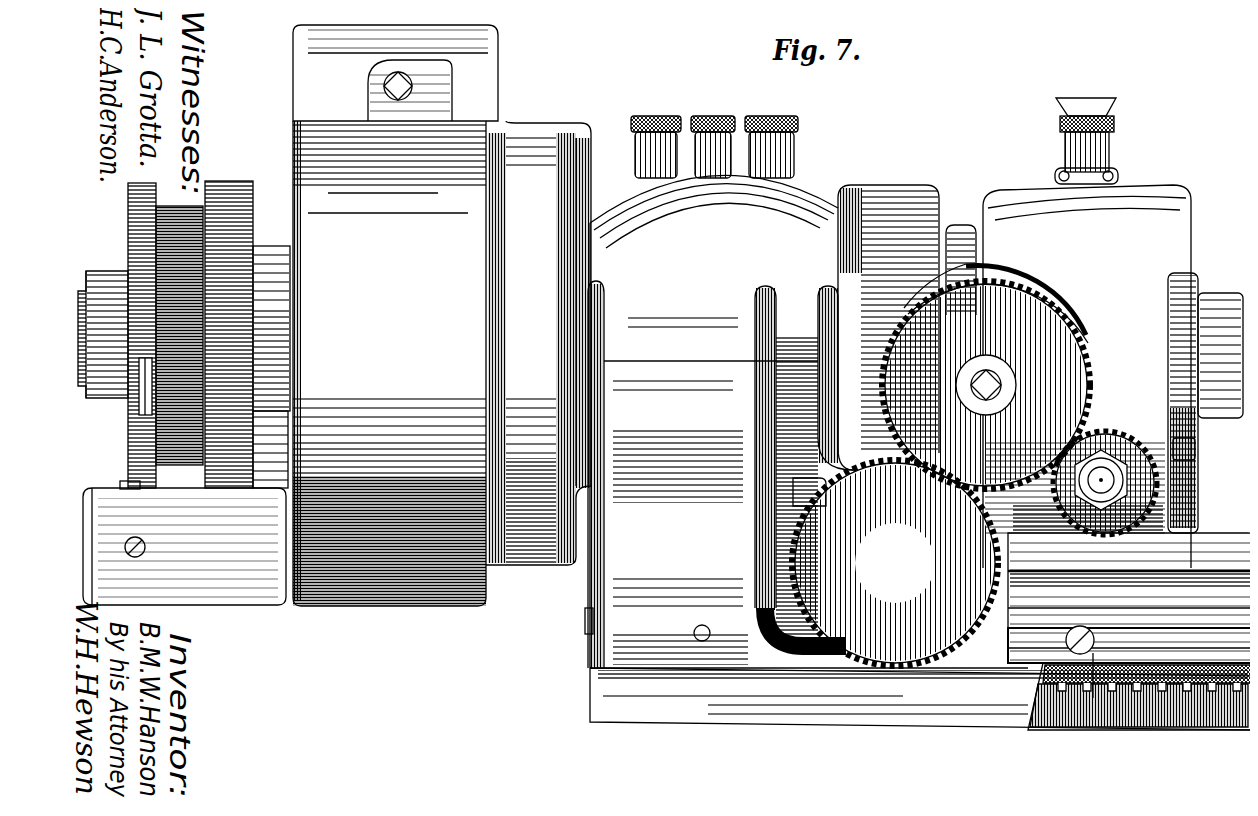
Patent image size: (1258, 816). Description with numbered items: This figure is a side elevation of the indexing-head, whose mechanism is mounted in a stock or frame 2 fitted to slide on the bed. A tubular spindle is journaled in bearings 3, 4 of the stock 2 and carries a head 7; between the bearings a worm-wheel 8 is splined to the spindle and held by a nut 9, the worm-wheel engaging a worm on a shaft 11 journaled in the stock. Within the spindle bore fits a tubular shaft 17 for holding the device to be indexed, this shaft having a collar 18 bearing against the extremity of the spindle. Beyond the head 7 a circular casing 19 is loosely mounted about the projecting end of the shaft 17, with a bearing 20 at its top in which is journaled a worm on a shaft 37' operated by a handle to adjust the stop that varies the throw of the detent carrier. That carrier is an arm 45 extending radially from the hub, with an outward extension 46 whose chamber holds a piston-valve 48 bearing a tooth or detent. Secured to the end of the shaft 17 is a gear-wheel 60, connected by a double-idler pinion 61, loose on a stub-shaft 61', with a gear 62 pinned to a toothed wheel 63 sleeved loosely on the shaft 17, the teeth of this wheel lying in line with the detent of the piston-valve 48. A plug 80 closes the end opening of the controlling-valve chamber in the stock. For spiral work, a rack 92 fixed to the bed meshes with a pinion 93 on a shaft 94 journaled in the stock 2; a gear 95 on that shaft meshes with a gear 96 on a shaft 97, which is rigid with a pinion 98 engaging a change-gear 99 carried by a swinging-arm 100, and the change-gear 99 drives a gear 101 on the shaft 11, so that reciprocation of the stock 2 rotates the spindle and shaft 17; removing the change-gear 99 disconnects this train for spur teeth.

The stock or frame 2 is at (919, 476).
The bearing 3 is at (714, 199).
The bearing 4 is at (1080, 400).
The head 7 is at (566, 120).
The worm-wheel 8 is at (904, 186).
The nut 9 is at (948, 220).
The shaft 11 is at (880, 543).
The tubular shaft 17 is at (1214, 290).
The collar 18 is at (1185, 270).
The circular casing 19 is at (395, 315).
The bearing 20 is at (425, 86).
The shaft 37' is at (482, 71).
The arm 45 is at (270, 449).
The outward extension 46 is at (184, 546).
The piston-valve 48 is at (114, 478).
The gear-wheel 60 is at (244, 190).
The double-idler pinion 61 is at (115, 391).
The stub-shaft 61' is at (184, 328).
The gear 62 is at (170, 210).
The toothed wheel 63 is at (128, 212).
The plug 80 is at (577, 612).
The rack 92 is at (1152, 712).
The pinion 93 is at (1148, 612).
The shaft 94 is at (1090, 643).
The gear 95 is at (1142, 637).
The gear 96 is at (1160, 468).
The shaft 97 is at (1186, 442).
The pinion 98 is at (1130, 497).
The change-gear 99 is at (986, 385).
The swinging-arm 100 is at (1020, 275).
The gear 101 is at (895, 563).